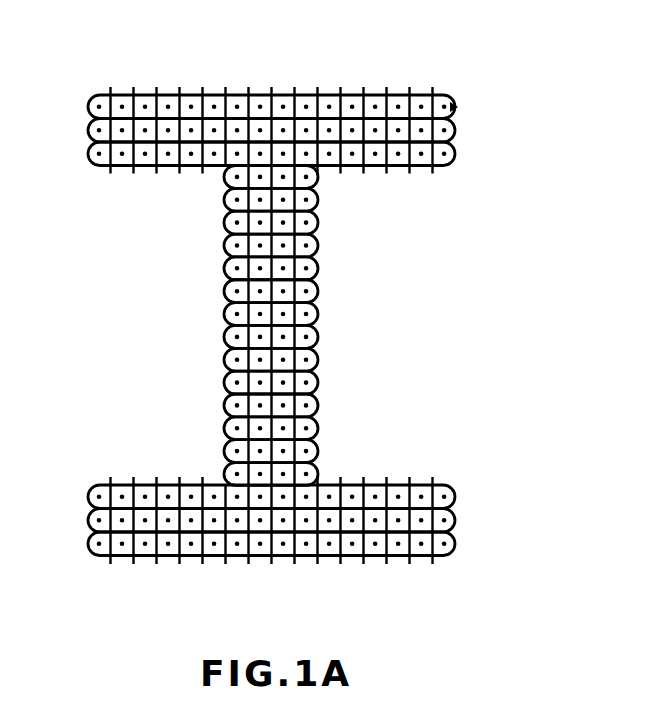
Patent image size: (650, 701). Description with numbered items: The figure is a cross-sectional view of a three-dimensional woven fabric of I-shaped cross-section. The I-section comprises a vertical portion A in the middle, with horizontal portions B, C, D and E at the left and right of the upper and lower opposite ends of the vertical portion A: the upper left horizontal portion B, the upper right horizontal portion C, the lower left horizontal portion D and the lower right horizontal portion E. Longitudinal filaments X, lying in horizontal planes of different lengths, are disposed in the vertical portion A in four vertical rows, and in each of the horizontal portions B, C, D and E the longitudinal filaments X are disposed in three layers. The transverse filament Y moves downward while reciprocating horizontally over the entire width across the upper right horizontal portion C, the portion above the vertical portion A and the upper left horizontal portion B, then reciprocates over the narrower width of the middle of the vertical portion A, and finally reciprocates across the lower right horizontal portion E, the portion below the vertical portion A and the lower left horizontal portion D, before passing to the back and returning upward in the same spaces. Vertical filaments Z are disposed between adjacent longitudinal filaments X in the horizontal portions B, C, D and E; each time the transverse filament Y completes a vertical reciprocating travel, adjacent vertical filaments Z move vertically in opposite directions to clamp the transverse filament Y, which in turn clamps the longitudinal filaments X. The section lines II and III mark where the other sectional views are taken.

The vertical portion A is at (210, 318).
The upper left horizontal portion B is at (108, 187).
The upper right horizontal portion C is at (435, 65).
The lower left horizontal portion D is at (104, 450).
The lower right horizontal portion E is at (383, 580).
The longitudinal filaments X is at (307, 107).
The transverse filament Y is at (445, 92).
The vertical filaments Z is at (112, 92).
The section line II- II is at (402, 82).
The section line III- III is at (277, 85).